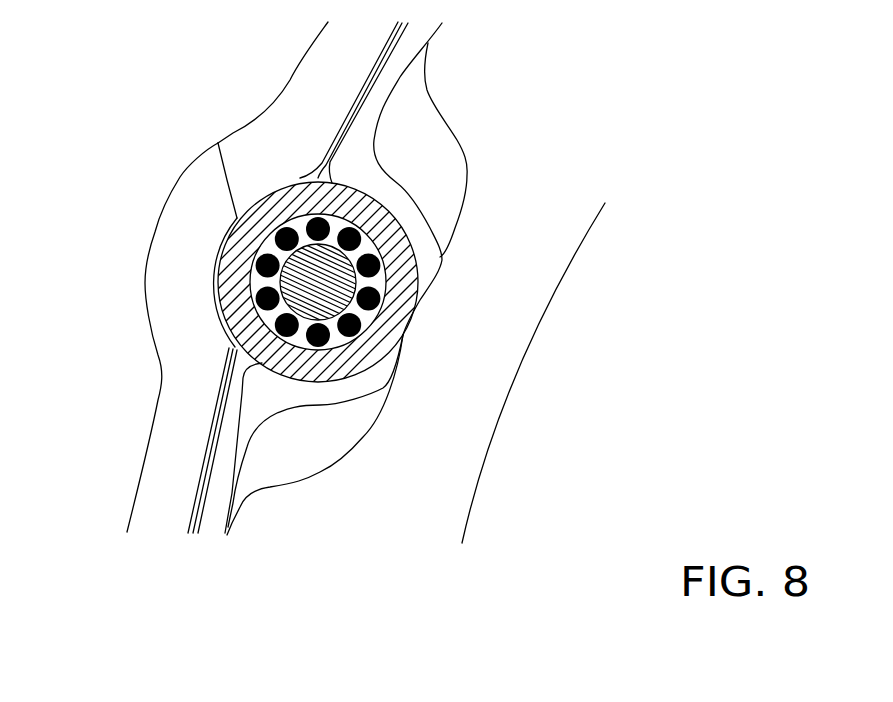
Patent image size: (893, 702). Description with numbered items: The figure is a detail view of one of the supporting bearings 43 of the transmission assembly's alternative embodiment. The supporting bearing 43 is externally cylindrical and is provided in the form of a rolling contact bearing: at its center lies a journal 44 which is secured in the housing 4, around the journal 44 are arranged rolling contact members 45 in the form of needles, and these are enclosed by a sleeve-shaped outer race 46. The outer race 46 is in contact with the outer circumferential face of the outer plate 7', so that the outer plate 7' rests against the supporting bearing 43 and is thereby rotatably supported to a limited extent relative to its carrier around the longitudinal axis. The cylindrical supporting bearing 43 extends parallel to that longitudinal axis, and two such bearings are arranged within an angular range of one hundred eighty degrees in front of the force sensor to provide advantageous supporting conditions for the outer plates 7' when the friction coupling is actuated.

The housing 4 is at (295, 115).
The outer plate 7' is at (533, 373).
The supporting bearing 43 is at (220, 243).
The journal 44 is at (295, 285).
The rolling contact members 45 is at (258, 265).
The outer race 46 is at (250, 350).